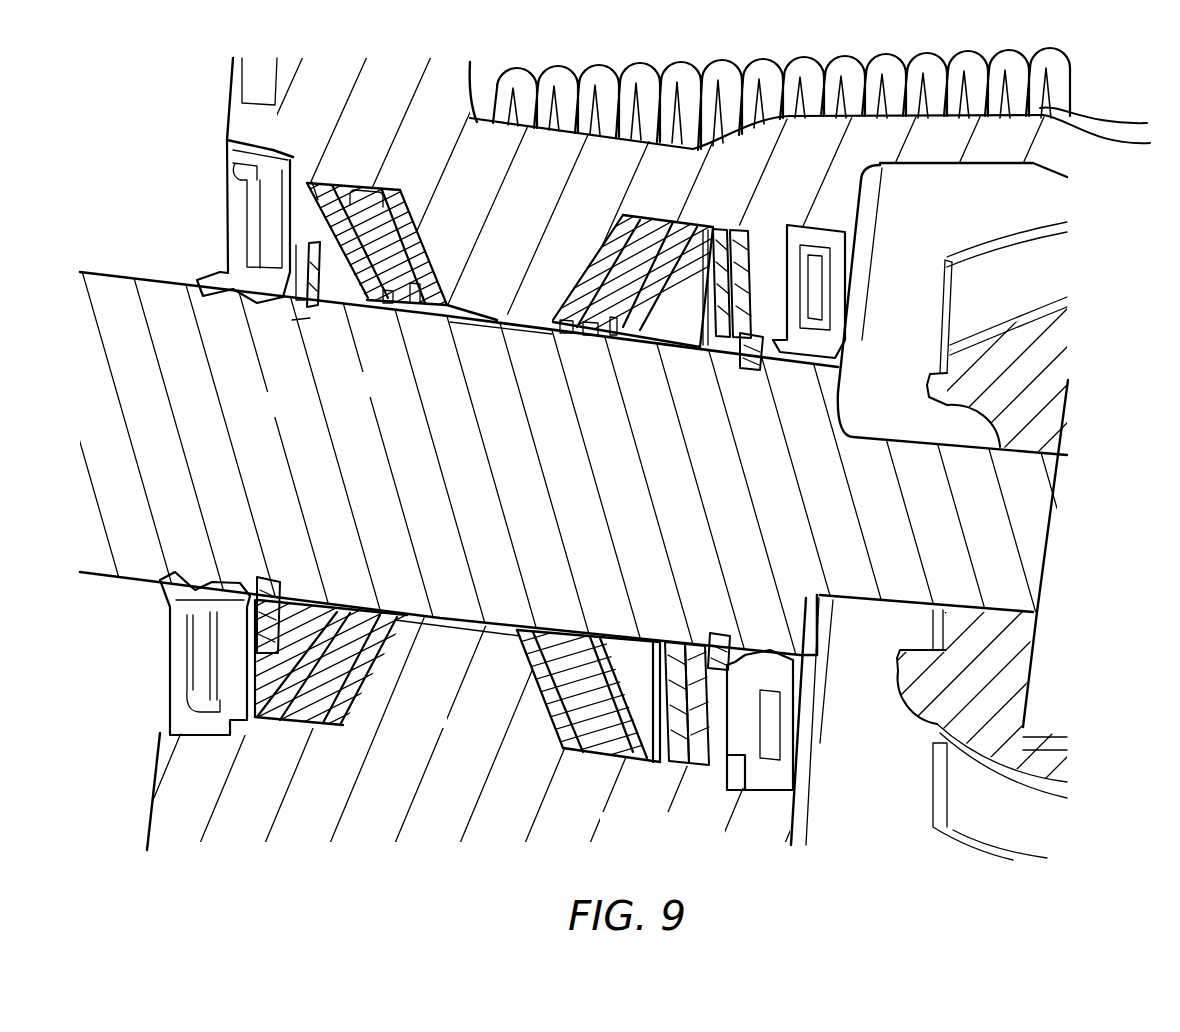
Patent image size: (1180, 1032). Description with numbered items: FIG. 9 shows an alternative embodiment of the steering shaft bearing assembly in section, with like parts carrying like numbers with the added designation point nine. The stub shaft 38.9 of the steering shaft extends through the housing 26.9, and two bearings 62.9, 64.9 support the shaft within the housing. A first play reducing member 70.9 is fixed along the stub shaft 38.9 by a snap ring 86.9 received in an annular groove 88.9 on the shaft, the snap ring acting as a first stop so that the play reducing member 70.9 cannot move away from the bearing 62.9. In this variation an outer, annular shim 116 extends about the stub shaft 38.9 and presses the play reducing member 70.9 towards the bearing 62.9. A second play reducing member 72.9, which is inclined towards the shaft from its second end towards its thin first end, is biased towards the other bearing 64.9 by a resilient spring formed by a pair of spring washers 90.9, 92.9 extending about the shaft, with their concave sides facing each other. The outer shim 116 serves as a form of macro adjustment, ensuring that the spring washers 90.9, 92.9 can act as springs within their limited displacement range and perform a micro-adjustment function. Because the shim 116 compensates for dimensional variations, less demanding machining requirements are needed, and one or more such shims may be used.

The housing 26.9 is at (258, 786).
The stub shaft 38.9 is at (444, 608).
The bearing 62.9 is at (365, 170).
The bearing 64.9 is at (663, 205).
The play reducing member 70.9 is at (320, 180).
The play reducing member 72.9 is at (710, 228).
The snap ring 86.9 is at (318, 322).
The annular groove 88.9 is at (297, 318).
The spring washer 90.9 is at (663, 752).
The spring washer 92.9 is at (692, 748).
The outer shim 116 is at (308, 262).